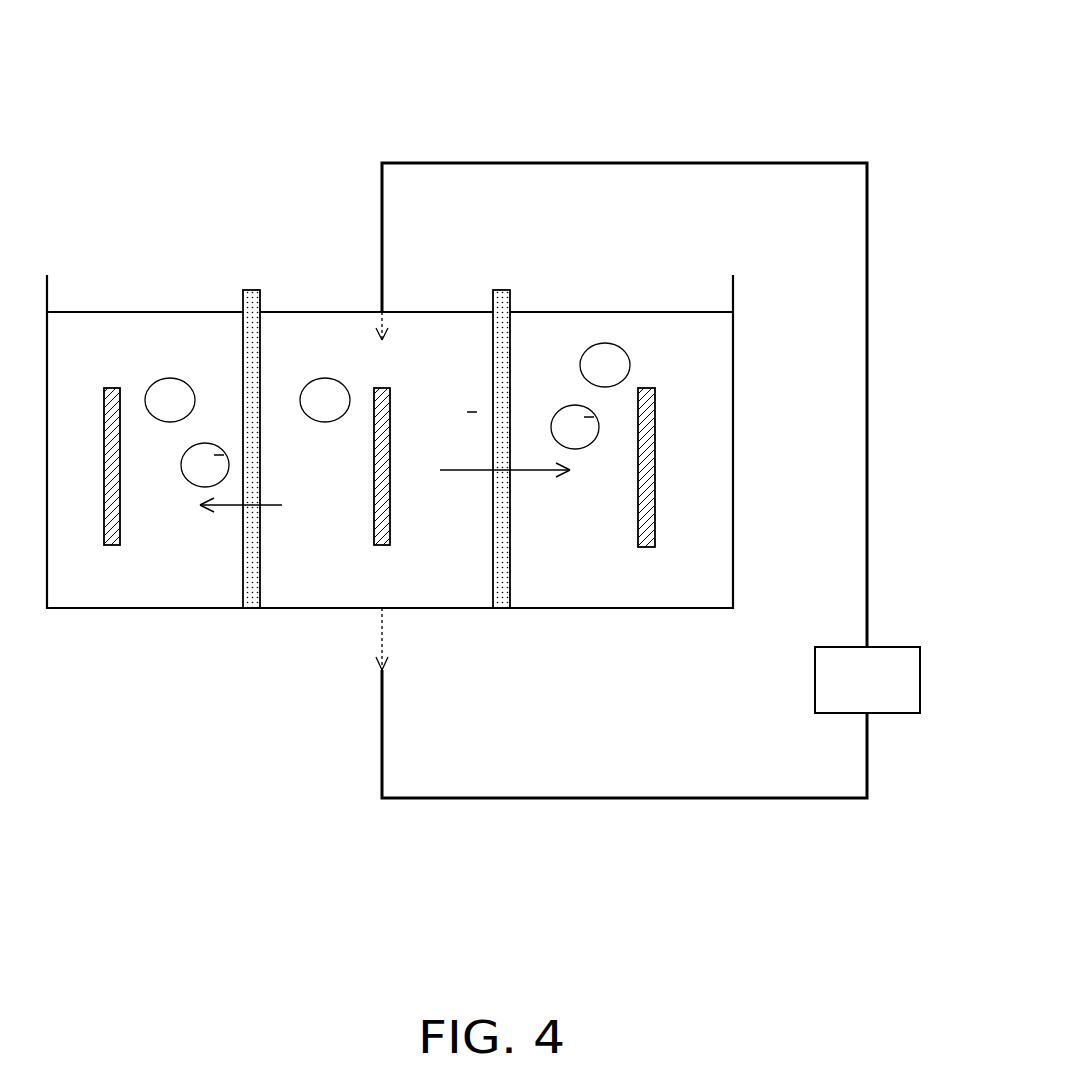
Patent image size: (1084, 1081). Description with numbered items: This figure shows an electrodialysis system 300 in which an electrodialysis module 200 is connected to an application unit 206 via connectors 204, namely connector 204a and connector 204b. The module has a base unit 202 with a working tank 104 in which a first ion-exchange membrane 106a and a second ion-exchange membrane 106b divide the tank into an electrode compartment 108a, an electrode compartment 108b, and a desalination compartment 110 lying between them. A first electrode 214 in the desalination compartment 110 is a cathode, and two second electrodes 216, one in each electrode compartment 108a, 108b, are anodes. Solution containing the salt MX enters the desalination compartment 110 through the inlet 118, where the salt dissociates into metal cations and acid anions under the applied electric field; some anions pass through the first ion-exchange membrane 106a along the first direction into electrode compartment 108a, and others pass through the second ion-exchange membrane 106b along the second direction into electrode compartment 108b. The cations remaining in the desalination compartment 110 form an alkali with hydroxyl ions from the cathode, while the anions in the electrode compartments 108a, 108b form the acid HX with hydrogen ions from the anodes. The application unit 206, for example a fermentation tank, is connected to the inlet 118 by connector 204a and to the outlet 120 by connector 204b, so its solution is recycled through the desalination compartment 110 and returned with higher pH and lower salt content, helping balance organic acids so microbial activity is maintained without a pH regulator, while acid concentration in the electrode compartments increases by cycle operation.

The electrodialysis system 300 is at (128, 5).
The electrodialysis module 200 is at (750, 287).
The connectors 204 is at (846, 895).
The connector 204a is at (868, 315).
The connector 204b is at (622, 800).
The application unit 206 is at (897, 715).
The base unit 202 is at (725, 712).
The working tank 104 is at (735, 487).
The first ion-exchange membrane 106a is at (500, 290).
The second ion-exchange membrane 106b is at (251, 290).
The electrode compartment 108a is at (572, 592).
The electrode compartment 108b is at (175, 595).
The desalination compartment 110 is at (305, 595).
The inlet 118 is at (382, 297).
The outlet 120 is at (385, 632).
The first electrode 214 is at (390, 530).
The second electrodes 216 is at (120, 497).